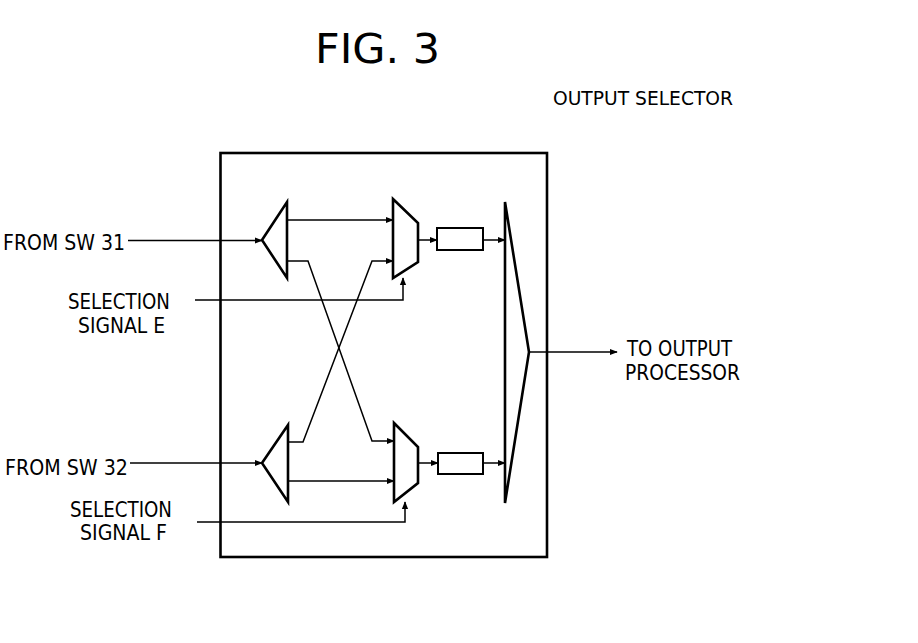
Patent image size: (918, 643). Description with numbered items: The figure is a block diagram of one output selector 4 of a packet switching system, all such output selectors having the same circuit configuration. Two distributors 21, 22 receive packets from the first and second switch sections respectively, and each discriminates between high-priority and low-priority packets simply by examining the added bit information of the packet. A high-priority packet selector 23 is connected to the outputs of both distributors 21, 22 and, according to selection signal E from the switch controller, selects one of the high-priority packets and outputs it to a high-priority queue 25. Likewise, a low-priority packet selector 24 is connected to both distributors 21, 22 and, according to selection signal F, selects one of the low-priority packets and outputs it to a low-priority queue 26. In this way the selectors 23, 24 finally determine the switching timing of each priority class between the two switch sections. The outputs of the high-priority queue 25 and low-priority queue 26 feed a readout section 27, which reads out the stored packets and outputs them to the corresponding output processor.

The output selector 4 is at (528, 152).
The distributor 21 is at (290, 206).
The distributor 22 is at (288, 425).
The high-priority packet selector 23 is at (406, 209).
The low-priority packet selector 24 is at (407, 433).
The high-priority queue 25 is at (463, 228).
The low-priority queue 26 is at (463, 453).
The readout section 27 is at (513, 242).